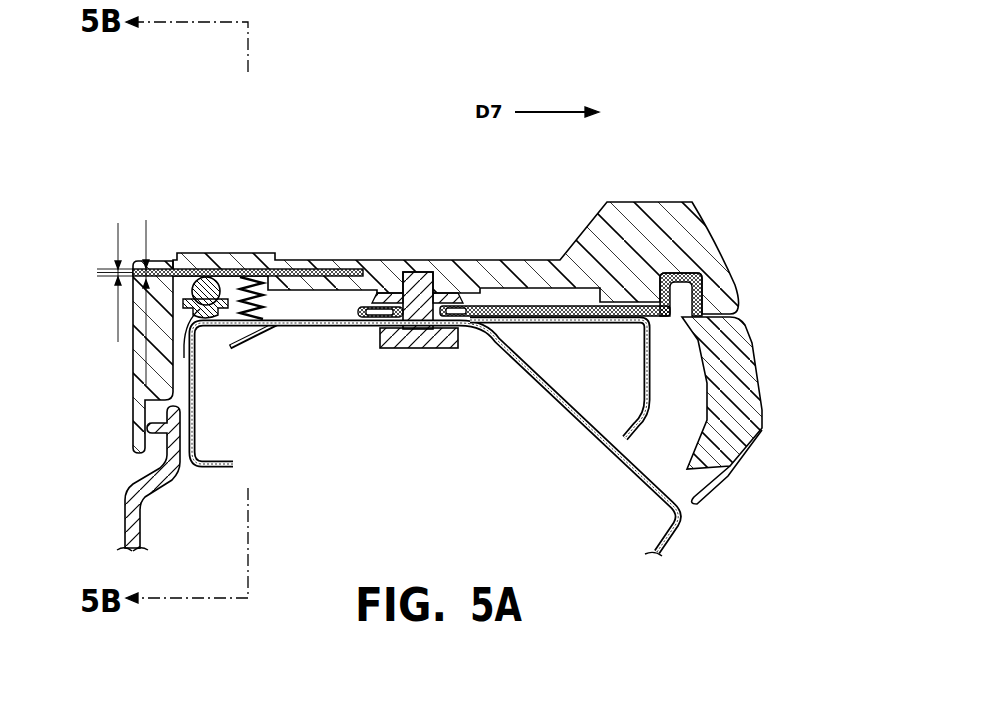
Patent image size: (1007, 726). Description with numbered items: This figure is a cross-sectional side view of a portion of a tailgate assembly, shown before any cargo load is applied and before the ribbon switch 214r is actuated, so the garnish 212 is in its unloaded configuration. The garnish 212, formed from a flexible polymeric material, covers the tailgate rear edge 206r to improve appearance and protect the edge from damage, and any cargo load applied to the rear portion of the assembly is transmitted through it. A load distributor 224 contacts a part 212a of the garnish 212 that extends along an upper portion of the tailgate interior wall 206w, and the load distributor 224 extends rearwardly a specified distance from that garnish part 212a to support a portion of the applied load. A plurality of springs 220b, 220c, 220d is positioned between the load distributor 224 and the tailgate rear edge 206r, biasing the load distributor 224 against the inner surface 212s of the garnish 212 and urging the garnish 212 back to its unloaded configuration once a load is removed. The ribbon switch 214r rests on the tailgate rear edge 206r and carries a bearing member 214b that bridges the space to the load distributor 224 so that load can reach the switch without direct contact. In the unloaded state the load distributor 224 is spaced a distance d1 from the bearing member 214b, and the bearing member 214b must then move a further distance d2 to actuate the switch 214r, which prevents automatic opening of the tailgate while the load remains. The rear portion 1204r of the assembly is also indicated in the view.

The garnish 212 is at (457, 275).
The part of the garnish 212a is at (143, 352).
The inner surface of the garnish 212s is at (333, 258).
The predetermined distance d1 is at (147, 247).
The predetermined distance d2 is at (118, 300).
The load distributor 224 is at (217, 267).
The bearing member 214b is at (210, 268).
The ribbon switch 214r is at (190, 343).
The spring 220b is at (309, 375).
The spring 220c is at (309, 375).
The spring 220d is at (268, 298).
The tailgate rear edge 206r is at (342, 330).
The tailgate interior wall 206w is at (196, 345).
The rail member 1204r is at (757, 295).